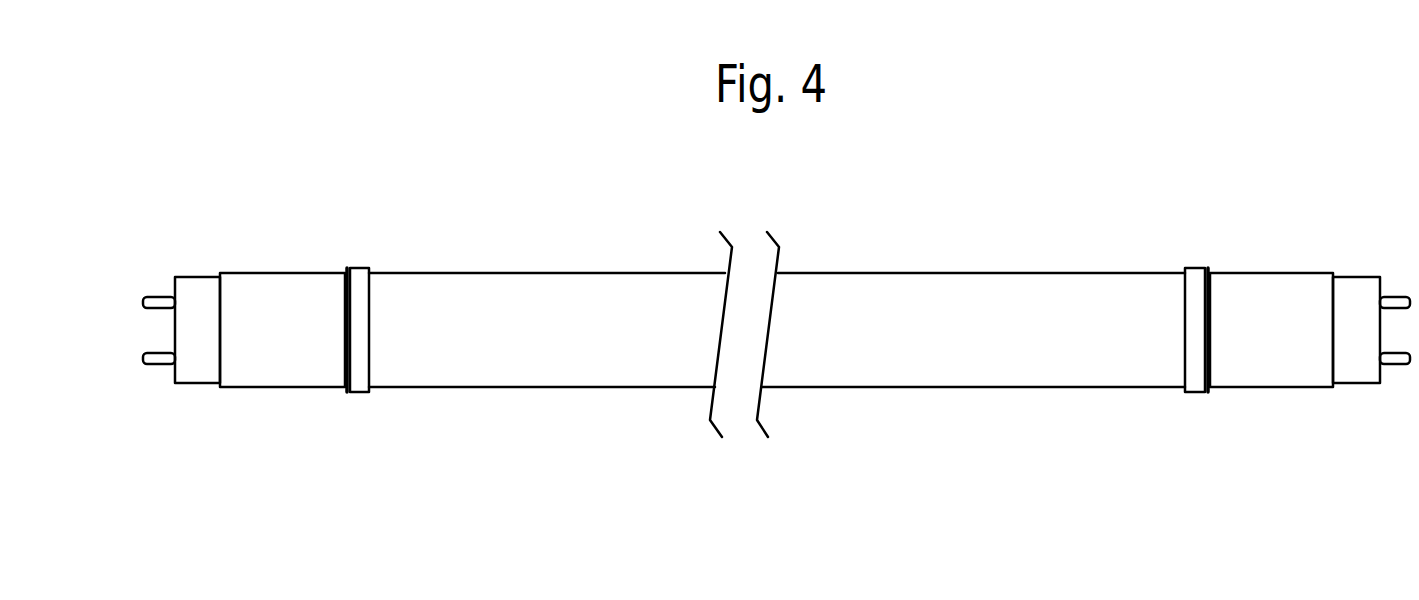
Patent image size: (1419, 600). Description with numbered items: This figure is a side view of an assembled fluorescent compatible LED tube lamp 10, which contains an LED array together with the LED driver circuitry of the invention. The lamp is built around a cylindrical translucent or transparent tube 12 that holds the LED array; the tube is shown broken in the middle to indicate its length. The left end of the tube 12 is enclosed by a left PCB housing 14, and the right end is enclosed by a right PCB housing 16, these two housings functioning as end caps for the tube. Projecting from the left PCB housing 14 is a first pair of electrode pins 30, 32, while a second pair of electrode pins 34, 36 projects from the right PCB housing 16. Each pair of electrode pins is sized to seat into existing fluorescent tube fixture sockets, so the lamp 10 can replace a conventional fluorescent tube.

The fluorescent compatible LED tube lamp 10 is at (777, 335).
The tube 12 is at (590, 400).
The left PCB housing 14 is at (300, 400).
The right PCB housing 16 is at (1252, 400).
The electrode pin 30 is at (138, 280).
The electrode pin 32 is at (140, 378).
The electrode pin 34 is at (1410, 280).
The electrode pin 36 is at (1412, 380).